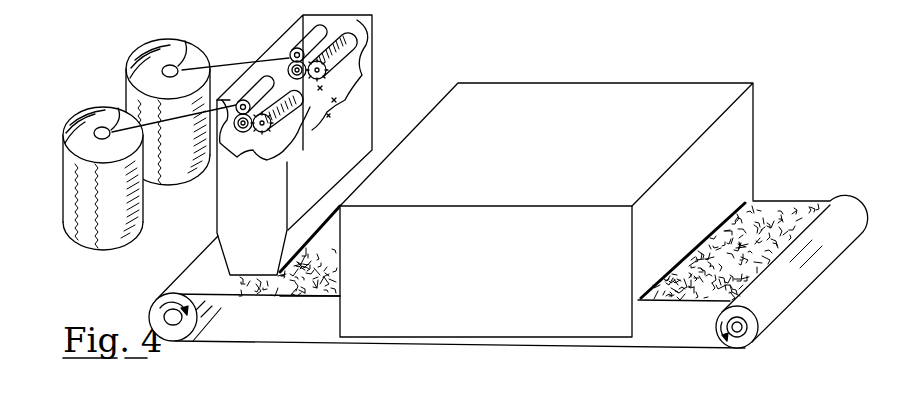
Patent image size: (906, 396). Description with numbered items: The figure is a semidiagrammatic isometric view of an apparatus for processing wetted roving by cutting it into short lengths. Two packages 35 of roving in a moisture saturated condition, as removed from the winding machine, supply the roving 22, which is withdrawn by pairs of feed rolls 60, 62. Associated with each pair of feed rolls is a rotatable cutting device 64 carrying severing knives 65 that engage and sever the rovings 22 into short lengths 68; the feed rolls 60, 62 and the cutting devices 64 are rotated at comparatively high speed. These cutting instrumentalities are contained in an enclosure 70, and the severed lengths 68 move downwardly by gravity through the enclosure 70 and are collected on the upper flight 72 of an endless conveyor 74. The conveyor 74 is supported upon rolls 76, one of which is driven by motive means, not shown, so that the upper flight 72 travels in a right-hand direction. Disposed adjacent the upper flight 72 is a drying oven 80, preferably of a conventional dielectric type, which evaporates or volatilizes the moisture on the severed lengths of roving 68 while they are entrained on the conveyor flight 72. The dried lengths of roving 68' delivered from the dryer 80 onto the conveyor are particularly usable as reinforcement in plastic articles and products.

The roving 22 is at (180, 50).
The packages of roving 35 is at (132, 53).
The feed roll 62 is at (283, 56).
The enclosure 70 is at (372, 67).
The feed roll 60 is at (297, 47).
The rotatable cutting device 64 is at (350, 42).
The severing knives 65 is at (328, 68).
The short lengths of roving 68 is at (314, 172).
The dried lengths of roving 68' is at (731, 231).
The drying oven 80 is at (575, 83).
The endless conveyor 74 is at (279, 343).
The upper flight of conveyor 72 is at (311, 299).
The conveyor rolls 76 is at (188, 333).